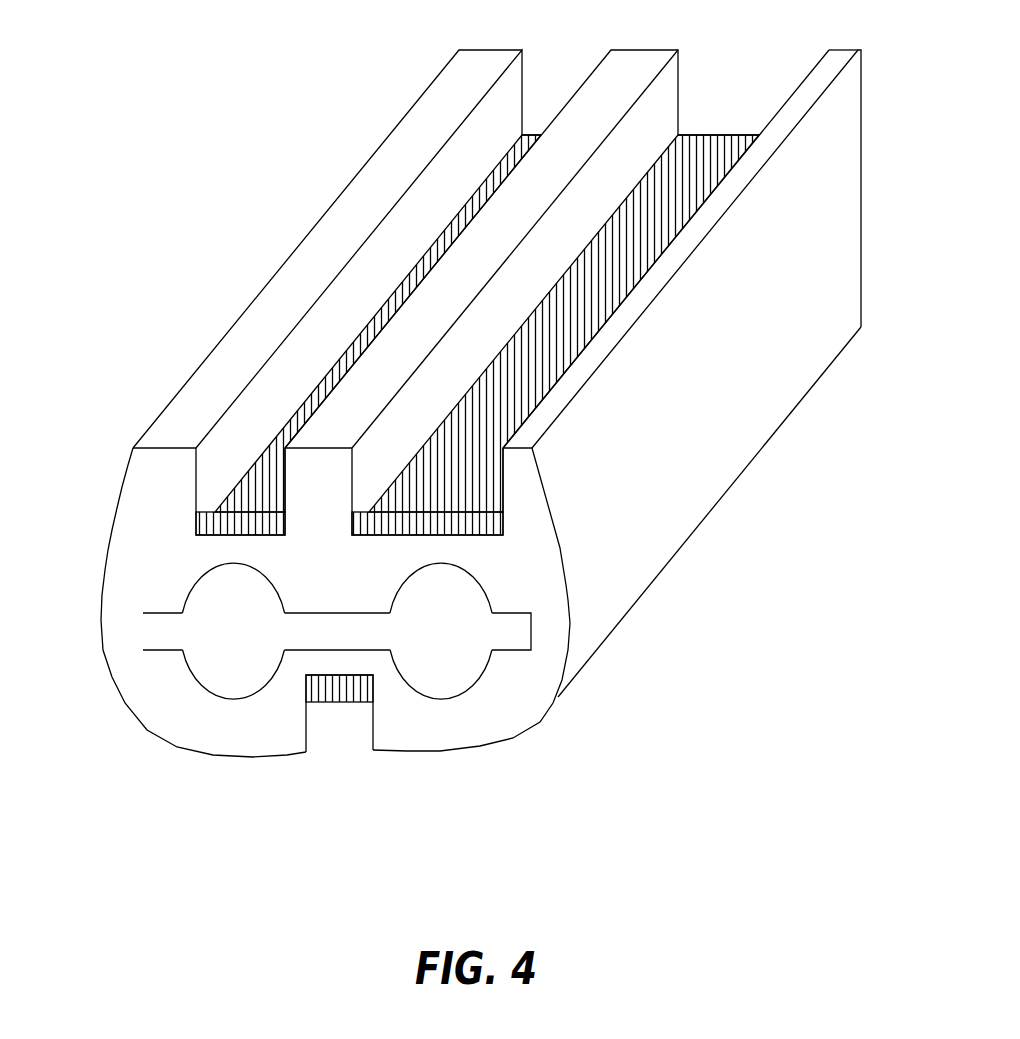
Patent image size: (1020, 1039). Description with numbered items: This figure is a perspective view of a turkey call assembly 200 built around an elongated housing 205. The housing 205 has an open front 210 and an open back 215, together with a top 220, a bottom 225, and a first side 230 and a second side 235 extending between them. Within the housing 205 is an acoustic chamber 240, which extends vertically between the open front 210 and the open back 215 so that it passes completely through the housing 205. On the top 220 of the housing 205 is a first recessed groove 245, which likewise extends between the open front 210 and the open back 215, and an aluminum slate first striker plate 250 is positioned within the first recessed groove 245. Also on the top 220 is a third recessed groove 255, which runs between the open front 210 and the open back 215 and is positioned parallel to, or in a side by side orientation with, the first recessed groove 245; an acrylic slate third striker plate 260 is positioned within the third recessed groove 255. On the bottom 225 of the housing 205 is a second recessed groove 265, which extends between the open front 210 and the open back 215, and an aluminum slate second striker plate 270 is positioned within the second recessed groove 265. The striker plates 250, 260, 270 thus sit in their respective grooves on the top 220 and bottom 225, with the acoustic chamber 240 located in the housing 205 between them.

The turkey call assembly 200 is at (283, 74).
The housing 205 is at (530, 712).
The open front 210 is at (182, 712).
The open back 215 is at (862, 196).
The top 220 is at (447, 333).
The bottom 225 is at (465, 752).
The first side 230 is at (98, 640).
The second side 235 is at (736, 346).
The acoustic chamber 240 is at (251, 646).
The first recessed groove 245 is at (200, 483).
The first striker plate 250 is at (526, 130).
The third recessed groove 255 is at (465, 391).
The third striker plate 260 is at (713, 130).
The second recessed groove 265 is at (312, 730).
The second striker plate 270 is at (338, 703).